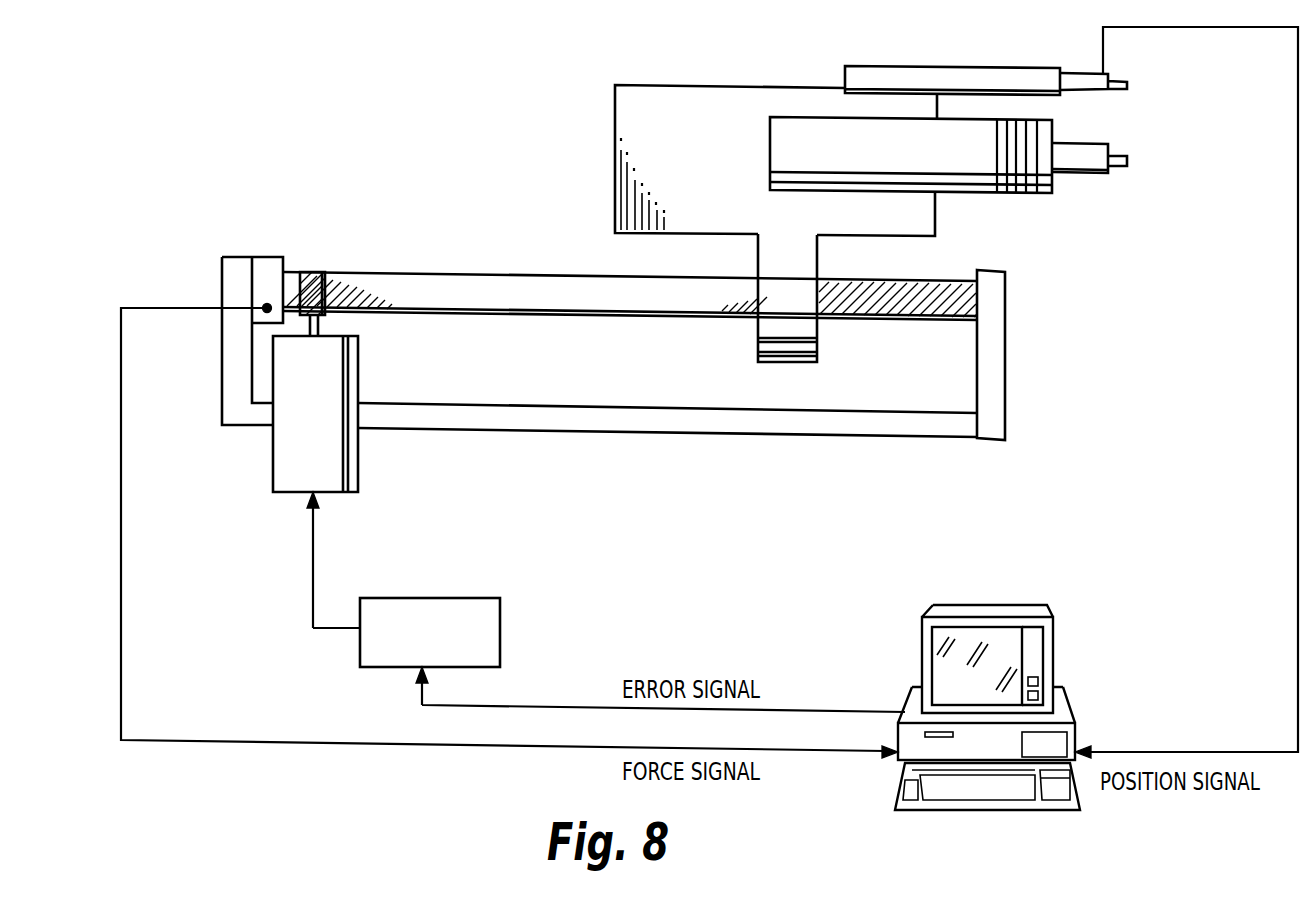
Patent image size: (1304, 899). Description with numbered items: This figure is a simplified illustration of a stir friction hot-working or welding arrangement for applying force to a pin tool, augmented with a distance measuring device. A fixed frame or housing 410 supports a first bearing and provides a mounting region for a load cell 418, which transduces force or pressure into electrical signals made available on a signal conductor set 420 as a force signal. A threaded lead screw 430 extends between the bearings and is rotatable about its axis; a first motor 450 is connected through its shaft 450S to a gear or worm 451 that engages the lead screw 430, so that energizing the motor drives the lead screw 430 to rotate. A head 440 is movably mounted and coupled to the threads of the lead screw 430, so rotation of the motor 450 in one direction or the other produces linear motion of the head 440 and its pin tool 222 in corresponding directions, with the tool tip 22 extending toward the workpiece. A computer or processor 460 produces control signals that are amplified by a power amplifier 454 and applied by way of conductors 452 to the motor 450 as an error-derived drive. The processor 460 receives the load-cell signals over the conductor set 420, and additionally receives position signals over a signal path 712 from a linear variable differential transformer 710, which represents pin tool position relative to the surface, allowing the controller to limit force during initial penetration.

The linear variable differential transformer 710 is at (991, 66).
The position signal line 712 is at (1298, 180).
The slider 22 is at (1127, 161).
The pin tool 222 is at (1093, 176).
The load cell 418 is at (977, 194).
The lead screw 430 is at (455, 272).
The gear or worm 451 is at (313, 271).
The motor shaft 450S is at (319, 331).
The first motor 450 is at (358, 462).
The fixed frame or housing 410 is at (613, 412).
The head 440 is at (818, 348).
The conductor set 452 is at (313, 545).
The power amplifier 454 is at (500, 632).
The signal conductor set 420 is at (333, 740).
The computer or processor 460 is at (990, 607).